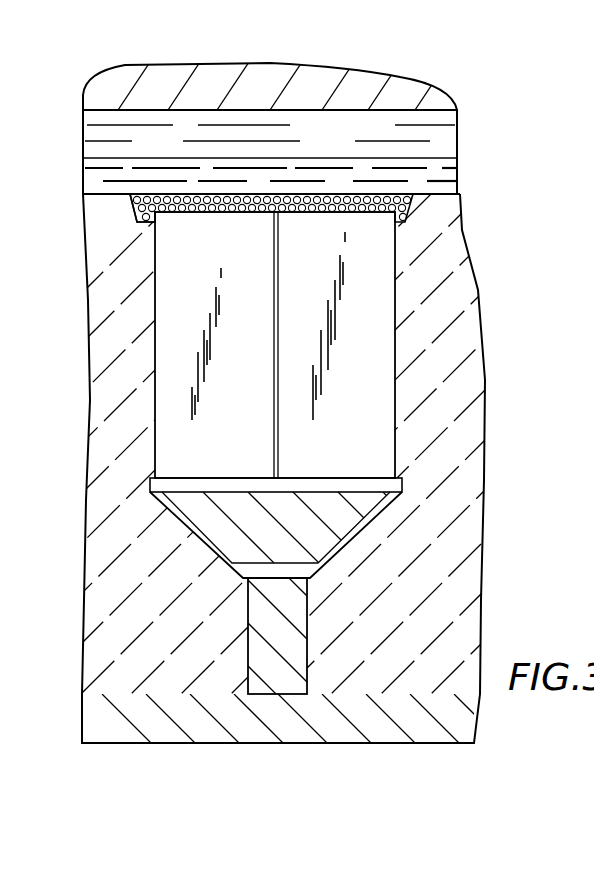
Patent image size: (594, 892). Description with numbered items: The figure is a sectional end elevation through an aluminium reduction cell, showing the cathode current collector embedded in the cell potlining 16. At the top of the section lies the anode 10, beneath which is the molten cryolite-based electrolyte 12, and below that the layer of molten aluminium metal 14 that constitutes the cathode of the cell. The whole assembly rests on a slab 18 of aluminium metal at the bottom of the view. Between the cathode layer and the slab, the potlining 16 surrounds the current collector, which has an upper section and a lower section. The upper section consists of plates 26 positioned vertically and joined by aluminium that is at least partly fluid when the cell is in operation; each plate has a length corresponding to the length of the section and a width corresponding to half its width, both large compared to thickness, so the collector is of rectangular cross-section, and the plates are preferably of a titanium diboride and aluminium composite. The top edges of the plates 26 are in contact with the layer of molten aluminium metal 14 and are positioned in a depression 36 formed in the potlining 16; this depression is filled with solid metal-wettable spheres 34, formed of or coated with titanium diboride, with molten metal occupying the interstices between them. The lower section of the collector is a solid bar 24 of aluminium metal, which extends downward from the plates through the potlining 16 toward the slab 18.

The anode 10 is at (425, 98).
The molten cryolite-based electrolyte 12 is at (432, 137).
The layer of molten aluminium metal 14 is at (438, 177).
The cell potlining 16 is at (97, 195).
The slab of aluminium metal 18 is at (457, 718).
The solid bar of aluminium metal 24 is at (280, 538).
The plates 26 is at (178, 313).
The metal-wettable spheres 34 is at (293, 195).
The depression 36 is at (130, 200).